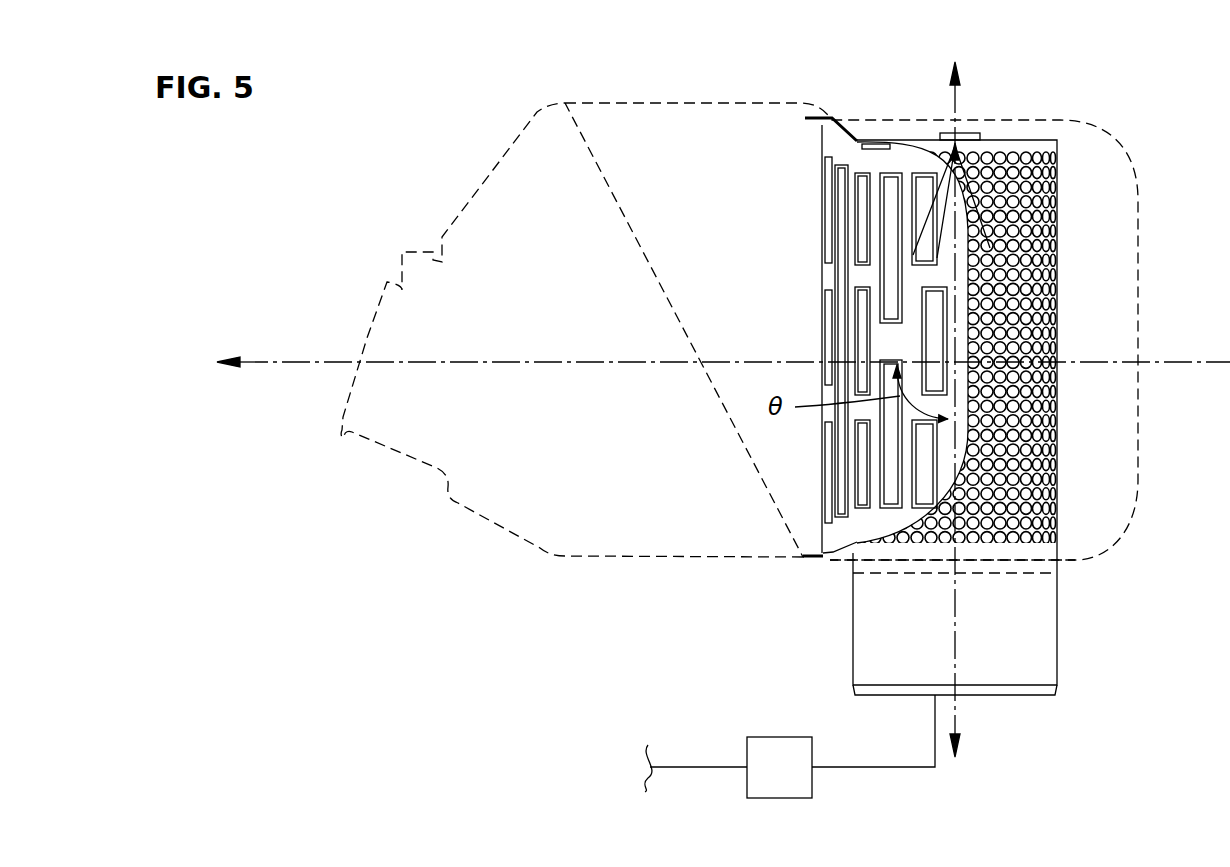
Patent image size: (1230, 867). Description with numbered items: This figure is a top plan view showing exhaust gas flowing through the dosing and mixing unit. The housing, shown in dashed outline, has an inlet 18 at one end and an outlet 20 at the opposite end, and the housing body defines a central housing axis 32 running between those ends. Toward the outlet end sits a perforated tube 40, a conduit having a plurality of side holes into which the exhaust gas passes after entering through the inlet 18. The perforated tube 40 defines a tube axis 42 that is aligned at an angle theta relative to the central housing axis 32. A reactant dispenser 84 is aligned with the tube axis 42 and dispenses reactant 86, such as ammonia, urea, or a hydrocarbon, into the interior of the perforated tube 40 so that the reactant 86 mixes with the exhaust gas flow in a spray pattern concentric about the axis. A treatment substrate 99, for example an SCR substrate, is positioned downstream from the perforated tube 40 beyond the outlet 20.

The inlet 18 is at (343, 417).
The central housing axis 32 is at (420, 364).
The tube axis 42 is at (950, 99).
The reactant dispenser 84 is at (966, 137).
The reactant 86 is at (980, 213).
The perforated tube 40 is at (1058, 246).
The outlet 20 is at (1030, 697).
The treatment substrate 99 is at (790, 746).